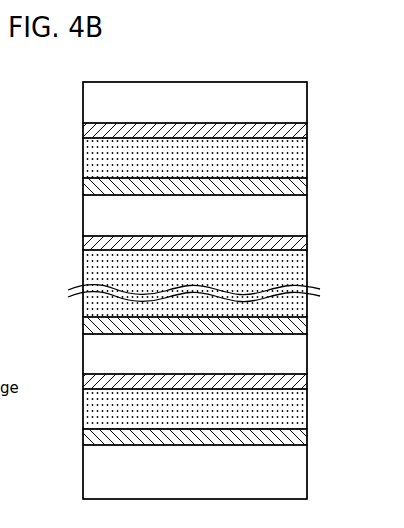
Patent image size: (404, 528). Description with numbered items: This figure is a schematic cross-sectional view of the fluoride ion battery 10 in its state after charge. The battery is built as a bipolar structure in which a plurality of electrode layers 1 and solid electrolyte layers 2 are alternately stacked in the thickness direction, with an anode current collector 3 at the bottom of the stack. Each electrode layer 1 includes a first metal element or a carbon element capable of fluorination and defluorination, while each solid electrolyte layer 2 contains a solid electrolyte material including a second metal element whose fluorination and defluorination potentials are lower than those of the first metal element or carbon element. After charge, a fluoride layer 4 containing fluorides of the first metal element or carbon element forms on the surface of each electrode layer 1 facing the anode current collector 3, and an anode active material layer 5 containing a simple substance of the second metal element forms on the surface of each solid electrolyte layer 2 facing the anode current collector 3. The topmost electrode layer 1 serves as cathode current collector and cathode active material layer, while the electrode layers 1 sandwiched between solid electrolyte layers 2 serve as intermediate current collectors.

The fluoride ion battery 10 is at (290, 69).
The electrode layer 1 is at (293, 109).
The solid electrolyte layer 2 is at (293, 166).
The anode current collector 3 is at (293, 471).
The fluoride layer 4 is at (293, 131).
The anode active material layer 5 is at (293, 187).